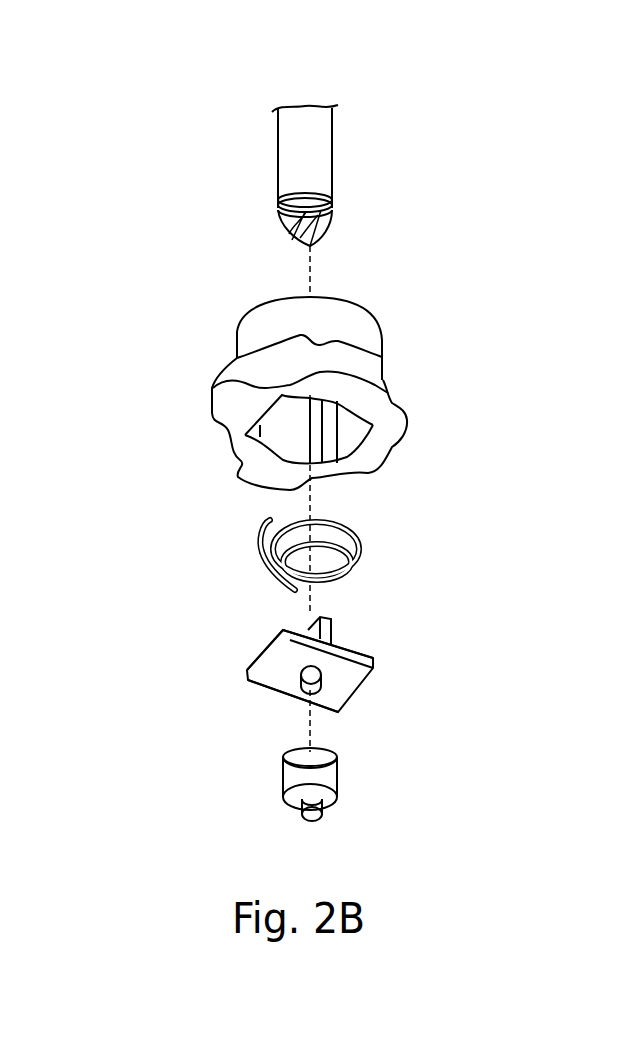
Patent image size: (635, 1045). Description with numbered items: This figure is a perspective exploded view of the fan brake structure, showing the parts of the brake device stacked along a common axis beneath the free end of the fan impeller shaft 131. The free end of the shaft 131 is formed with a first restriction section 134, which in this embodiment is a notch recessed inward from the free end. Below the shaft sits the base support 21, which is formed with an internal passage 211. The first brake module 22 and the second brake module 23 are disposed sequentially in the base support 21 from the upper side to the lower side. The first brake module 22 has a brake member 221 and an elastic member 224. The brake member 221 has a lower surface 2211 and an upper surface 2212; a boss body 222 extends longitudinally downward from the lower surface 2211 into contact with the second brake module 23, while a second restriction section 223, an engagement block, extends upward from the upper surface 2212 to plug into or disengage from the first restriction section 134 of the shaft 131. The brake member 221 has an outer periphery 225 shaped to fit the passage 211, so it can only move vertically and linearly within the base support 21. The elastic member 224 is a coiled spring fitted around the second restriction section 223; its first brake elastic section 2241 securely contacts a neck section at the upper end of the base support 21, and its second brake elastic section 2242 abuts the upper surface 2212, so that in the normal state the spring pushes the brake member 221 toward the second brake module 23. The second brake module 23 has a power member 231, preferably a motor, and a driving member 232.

The shaft 131 is at (313, 155).
The first restriction section 134 is at (327, 223).
The base support 21 is at (371, 386).
The passage 211 is at (475, 458).
The first brake module 22 is at (375, 667).
The brake member 221 is at (302, 678).
The lower surface 2211 is at (270, 682).
The upper surface 2212 is at (275, 628).
The boss body 222 is at (322, 678).
The second restriction section 223 is at (333, 629).
The elastic member 224 is at (323, 545).
The first brake elastic section 2241 is at (265, 530).
The second brake elastic section 2242 is at (206, 574).
The outer periphery 225 is at (240, 745).
The second brake module 23 is at (414, 794).
The power member 231 is at (391, 811).
The driving member 232 is at (340, 754).